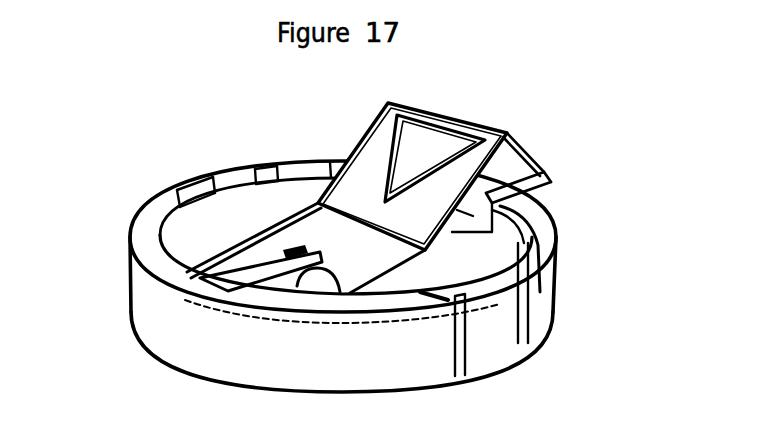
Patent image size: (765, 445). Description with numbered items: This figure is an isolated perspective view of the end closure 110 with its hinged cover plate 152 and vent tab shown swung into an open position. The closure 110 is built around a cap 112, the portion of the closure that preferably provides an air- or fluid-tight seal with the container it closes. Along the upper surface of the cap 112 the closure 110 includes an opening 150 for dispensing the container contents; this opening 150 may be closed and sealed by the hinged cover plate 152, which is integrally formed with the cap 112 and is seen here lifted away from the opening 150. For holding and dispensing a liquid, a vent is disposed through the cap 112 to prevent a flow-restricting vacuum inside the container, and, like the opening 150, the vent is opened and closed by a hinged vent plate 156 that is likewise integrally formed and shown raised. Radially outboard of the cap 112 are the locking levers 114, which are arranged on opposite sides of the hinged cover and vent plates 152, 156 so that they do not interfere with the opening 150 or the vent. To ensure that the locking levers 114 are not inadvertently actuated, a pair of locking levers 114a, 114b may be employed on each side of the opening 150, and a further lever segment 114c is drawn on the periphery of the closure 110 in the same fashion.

The end closure 110 is at (612, 168).
The cap 112 is at (468, 260).
The locking levers 114 is at (182, 184).
The locking lever 114a is at (237, 180).
The locking lever 114b is at (187, 190).
The rim segment portion 114c is at (490, 358).
The opening 150 is at (337, 268).
The hinged cover plate 152 is at (372, 142).
The hinged vent plate 156 is at (523, 183).